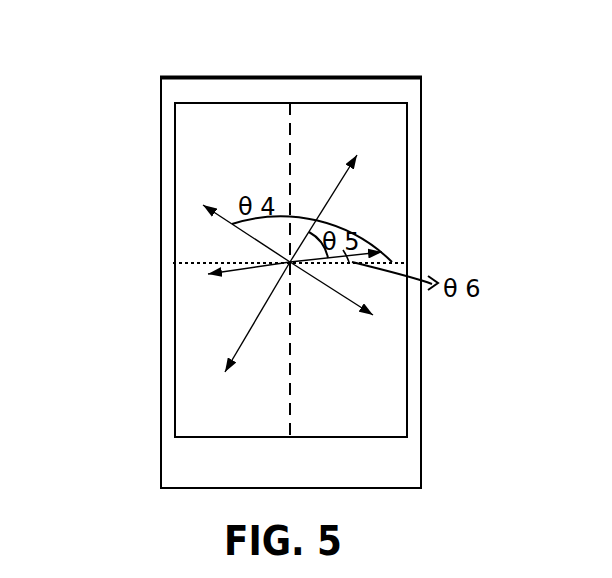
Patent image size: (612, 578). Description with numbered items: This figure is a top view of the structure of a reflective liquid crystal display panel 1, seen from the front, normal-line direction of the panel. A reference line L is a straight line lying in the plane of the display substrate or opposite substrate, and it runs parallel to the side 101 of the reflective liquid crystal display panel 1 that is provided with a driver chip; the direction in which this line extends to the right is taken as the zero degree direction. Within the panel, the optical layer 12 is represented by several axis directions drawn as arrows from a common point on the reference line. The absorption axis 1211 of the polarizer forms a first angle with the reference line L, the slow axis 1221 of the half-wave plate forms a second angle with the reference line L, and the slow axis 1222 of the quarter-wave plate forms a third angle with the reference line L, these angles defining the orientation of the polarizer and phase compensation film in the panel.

The reflective liquid crystal display panel 1 is at (161, 323).
The side 101 is at (263, 77).
The display area 12 is at (175, 287).
The absorption axis 1211 is at (216, 206).
The slow axis 1221 is at (342, 183).
The slow axis 1222 is at (242, 269).